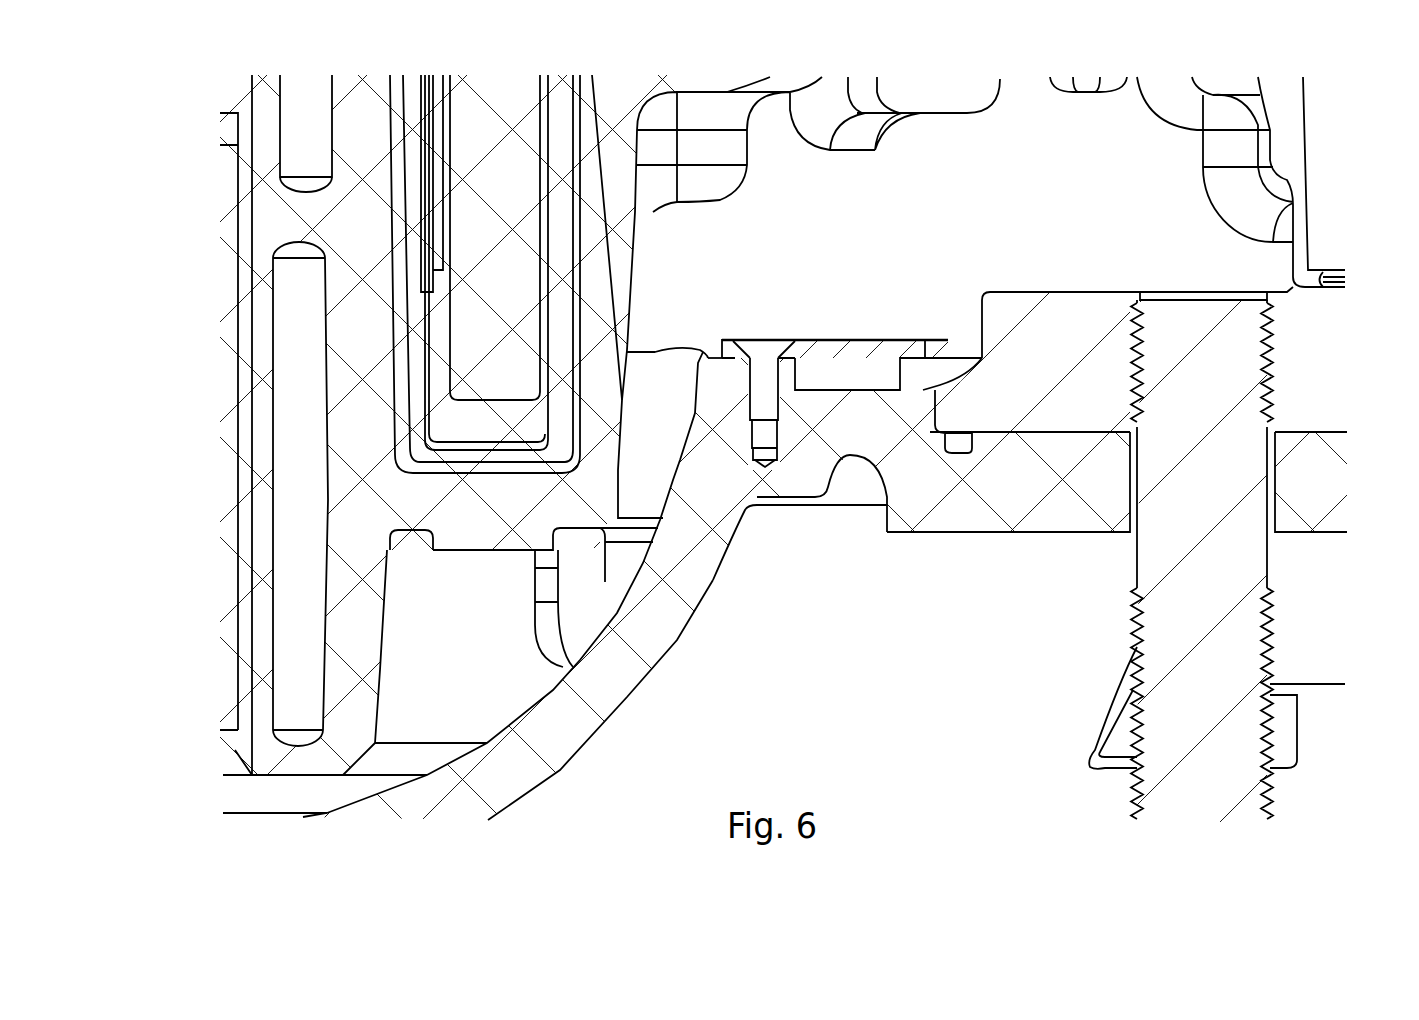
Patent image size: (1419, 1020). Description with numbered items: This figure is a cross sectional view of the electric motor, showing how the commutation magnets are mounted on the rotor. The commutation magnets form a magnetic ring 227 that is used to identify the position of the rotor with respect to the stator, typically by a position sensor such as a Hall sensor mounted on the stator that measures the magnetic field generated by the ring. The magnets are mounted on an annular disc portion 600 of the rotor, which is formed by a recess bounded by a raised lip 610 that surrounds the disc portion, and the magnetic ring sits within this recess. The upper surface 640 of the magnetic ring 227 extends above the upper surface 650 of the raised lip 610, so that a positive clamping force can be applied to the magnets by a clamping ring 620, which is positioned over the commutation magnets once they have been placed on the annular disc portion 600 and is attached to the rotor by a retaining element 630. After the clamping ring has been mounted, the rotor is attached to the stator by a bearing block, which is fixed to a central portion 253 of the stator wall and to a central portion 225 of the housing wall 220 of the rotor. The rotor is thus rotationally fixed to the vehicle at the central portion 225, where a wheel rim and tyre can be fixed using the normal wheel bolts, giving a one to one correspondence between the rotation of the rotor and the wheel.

The housing wall 220 is at (648, 682).
The central portion 225 is at (1060, 532).
The magnetic ring 227 is at (812, 385).
The central portion 253 is at (633, 278).
The annular disc portion 600 is at (937, 350).
The raised lip 610 is at (710, 352).
The clamping ring 620 is at (868, 330).
The retaining element 630 is at (763, 338).
The upper surface 640 is at (888, 337).
The upper surface 650 is at (670, 350).